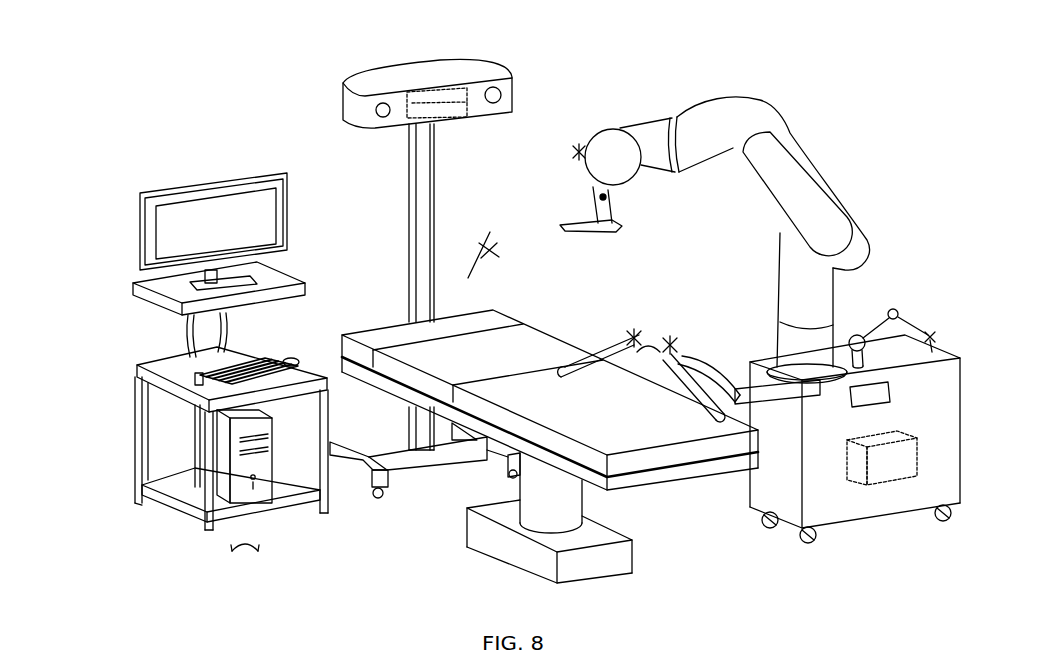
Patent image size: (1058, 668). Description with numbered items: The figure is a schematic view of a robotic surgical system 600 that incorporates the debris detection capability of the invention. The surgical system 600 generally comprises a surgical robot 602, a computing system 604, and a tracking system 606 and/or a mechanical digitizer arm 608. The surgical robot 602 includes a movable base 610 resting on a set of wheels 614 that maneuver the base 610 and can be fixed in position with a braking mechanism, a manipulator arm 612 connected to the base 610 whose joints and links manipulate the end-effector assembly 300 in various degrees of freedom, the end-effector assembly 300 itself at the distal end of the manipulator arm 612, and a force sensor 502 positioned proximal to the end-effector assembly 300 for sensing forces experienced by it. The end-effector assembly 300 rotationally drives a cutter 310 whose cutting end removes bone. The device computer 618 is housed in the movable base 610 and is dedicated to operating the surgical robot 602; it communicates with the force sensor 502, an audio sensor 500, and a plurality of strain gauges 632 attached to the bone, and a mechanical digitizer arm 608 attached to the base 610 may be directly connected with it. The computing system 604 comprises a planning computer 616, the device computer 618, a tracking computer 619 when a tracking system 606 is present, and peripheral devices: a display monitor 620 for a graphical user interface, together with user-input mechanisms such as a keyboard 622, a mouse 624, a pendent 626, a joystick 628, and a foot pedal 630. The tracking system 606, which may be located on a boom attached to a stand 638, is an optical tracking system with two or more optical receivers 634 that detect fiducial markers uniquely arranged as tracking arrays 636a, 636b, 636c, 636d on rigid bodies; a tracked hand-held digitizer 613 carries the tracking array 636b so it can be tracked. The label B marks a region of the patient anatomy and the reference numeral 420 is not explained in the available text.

The surgical system 600 is at (212, 73).
The tracking computer 619 is at (105, 158).
The display monitor 620 is at (205, 185).
The pendent 626 is at (182, 302).
The keyboard 622 is at (248, 366).
The mouse 624 is at (293, 363).
The joystick 628 is at (197, 383).
The computing system 604 is at (175, 447).
The planning computer 616 is at (263, 493).
The foot pedal 630 is at (240, 570).
The tracking system 606 is at (340, 107).
The optical receivers 634 is at (386, 104).
The projector 420 is at (467, 110).
The stand 638 is at (408, 230).
The tracking array 636a is at (581, 146).
The tracking array 636b is at (489, 232).
The tracking array 636c is at (622, 338).
The tracking array 636d is at (670, 334).
The end-effector assembly 300 is at (578, 205).
The force sensor 502 is at (610, 199).
The cutter 310 is at (566, 231).
The manipulator arm 612 is at (808, 175).
The surgical robot 602 is at (876, 210).
The mechanical digitizer arm 608 is at (916, 302).
The audio sensor 500 is at (890, 388).
The device computer 618 is at (892, 486).
The wheels 614 is at (805, 540).
The movable base 610 is at (752, 482).
The strain gauges 632 is at (713, 363).
The tracked hand-held digitizer 613 is at (492, 273).
The patient anatomy B is at (641, 382).